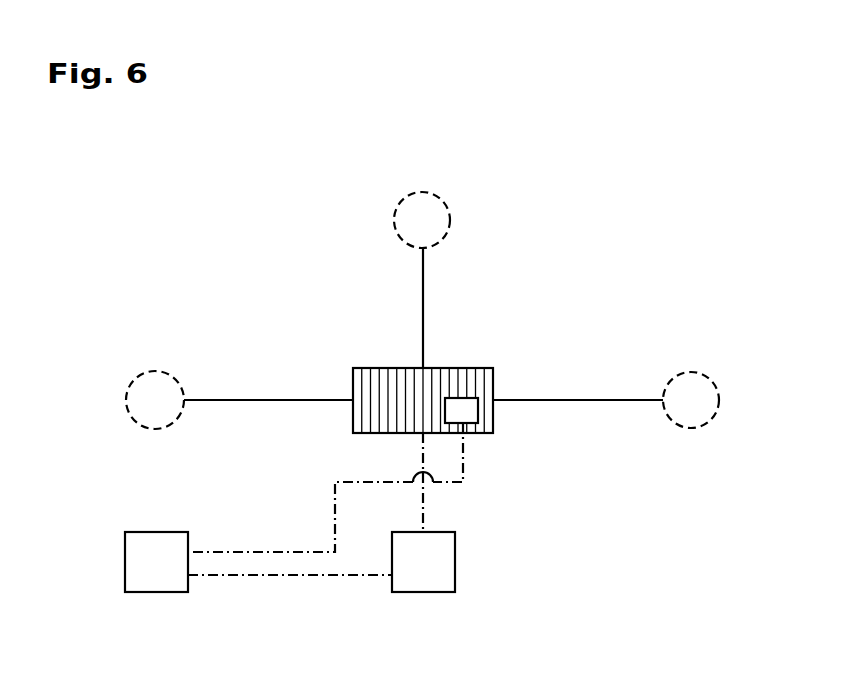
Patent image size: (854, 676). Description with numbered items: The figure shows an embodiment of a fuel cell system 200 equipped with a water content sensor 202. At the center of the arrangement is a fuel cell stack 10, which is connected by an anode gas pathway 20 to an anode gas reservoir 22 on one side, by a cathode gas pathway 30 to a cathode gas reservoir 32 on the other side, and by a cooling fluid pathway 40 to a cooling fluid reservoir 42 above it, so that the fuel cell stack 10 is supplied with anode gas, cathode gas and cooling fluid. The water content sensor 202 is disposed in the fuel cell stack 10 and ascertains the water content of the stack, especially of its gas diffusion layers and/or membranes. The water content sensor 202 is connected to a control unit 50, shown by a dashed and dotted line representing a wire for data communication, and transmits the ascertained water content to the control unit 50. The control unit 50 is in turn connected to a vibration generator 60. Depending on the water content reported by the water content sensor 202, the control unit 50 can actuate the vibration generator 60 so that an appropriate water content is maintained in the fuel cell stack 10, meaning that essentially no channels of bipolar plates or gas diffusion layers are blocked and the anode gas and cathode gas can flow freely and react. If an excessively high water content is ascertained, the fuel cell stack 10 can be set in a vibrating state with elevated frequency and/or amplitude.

The fuel cell system 200 is at (684, 152).
The fuel cell stack 10 is at (384, 368).
The anode gas pathway 20 is at (272, 400).
The anode gas reservoir 22 is at (157, 372).
The cathode gas pathway 30 is at (575, 400).
The cathode gas reservoir 32 is at (690, 372).
The cooling fluid pathway 40 is at (424, 276).
The cooling fluid reservoir 42 is at (450, 215).
The control unit 50 is at (125, 560).
The vibration generator 60 is at (455, 560).
The water content sensor 202 is at (478, 413).